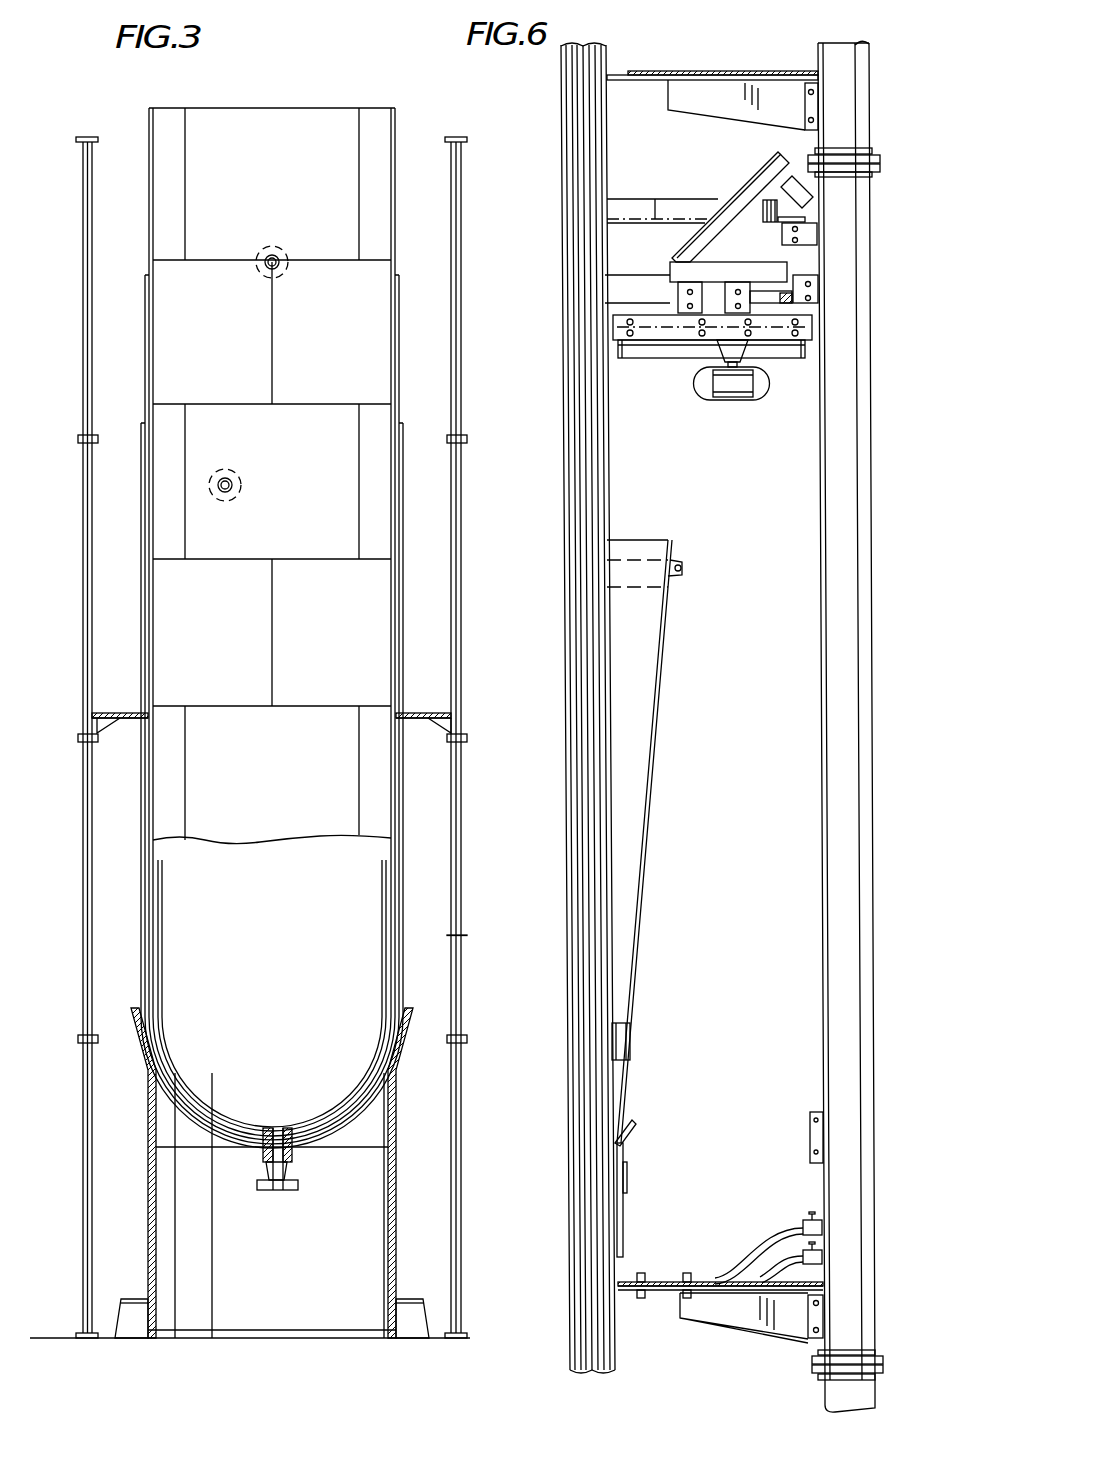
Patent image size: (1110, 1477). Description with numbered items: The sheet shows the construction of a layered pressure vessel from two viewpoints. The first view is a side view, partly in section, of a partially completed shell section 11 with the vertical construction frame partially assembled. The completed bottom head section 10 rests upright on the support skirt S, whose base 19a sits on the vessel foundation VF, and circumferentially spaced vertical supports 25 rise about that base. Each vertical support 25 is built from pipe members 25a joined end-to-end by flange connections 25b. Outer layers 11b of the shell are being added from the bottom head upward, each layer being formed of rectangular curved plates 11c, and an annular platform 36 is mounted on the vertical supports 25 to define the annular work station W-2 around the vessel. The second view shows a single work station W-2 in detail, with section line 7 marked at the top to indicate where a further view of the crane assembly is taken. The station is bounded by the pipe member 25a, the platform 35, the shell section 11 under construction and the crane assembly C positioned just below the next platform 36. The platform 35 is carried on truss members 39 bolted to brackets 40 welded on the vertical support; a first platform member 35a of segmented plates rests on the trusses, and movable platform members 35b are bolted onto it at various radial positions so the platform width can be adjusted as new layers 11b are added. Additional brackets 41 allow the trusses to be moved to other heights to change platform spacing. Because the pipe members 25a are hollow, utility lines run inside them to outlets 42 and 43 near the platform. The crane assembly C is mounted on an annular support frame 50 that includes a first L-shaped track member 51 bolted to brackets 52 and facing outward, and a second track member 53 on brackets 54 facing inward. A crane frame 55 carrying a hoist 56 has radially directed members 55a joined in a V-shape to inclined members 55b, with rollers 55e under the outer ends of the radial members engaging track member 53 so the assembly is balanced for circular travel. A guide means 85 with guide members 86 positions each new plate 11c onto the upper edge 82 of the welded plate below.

In FIG. 3, the bottom head section 10 is at (270, 1146).
In FIG. 6, the shell section 11 is at (579, 708).
In FIG. 3, the outer shell layer 11b is at (400, 612).
In FIG. 6, the outer shell layer 11b is at (578, 727).
In FIG. 3, the rectangular plate 11c is at (338, 344).
In FIG. 6, the rectangular plate 11c is at (652, 727).
In FIG. 3, the skirt base 19a is at (138, 1299).
In FIG. 3, the vertical support 25 is at (83, 490).
In FIG. 3, the pipe member 25a is at (462, 958).
In FIG. 6, the pipe member 25a is at (871, 652).
In FIG. 3, the flange connection 25b is at (462, 1039).
In FIG. 6, the platform 35 is at (720, 1285).
In FIG. 6, the first platform member 35a is at (660, 1290).
In FIG. 6, the movable platform member 35b is at (660, 1281).
In FIG. 3, the platform 36 is at (105, 714).
In FIG. 6, the platform 36 is at (657, 72).
In FIG. 6, the truss member 39 is at (717, 1332).
In FIG. 6, the bracket 40 is at (808, 1317).
In FIG. 6, the additional bracket 41 is at (810, 1132).
In FIG. 6, the utility outlet 42 is at (808, 1218).
In FIG. 6, the utility outlet 43 is at (790, 1250).
In FIG. 6, the annular support frame 50 is at (671, 199).
In FIG. 6, the first annular track member 51 is at (765, 222).
In FIG. 6, the bracket 52 is at (800, 231).
In FIG. 6, the second annular track member 53 is at (790, 268).
In FIG. 6, the bracket 54 is at (810, 291).
In FIG. 6, the crane frame 55 is at (678, 256).
In FIG. 6, the radially directed frame member 55a is at (712, 270).
In FIG. 6, the inclined frame member 55b is at (772, 170).
In FIG. 6, the roller 55e is at (795, 300).
In FIG. 6, the hoist 56 is at (742, 388).
In FIG. 6, the section line 7 is at (537, 195).
In FIG. 6, the upper edge 82 is at (614, 1138).
In FIG. 6, the guide means 85 is at (665, 1038).
In FIG. 6, the guide member 86 is at (625, 1210).
In FIG. 6, the crane assembly C is at (803, 254).
In FIG. 3, the skirt S is at (148, 1165).
In FIG. 3, the vessel foundation VF is at (493, 1338).
In FIG. 3, the annular work station W-2 is at (100, 607).
In FIG. 6, the annular work station W-2 is at (748, 850).